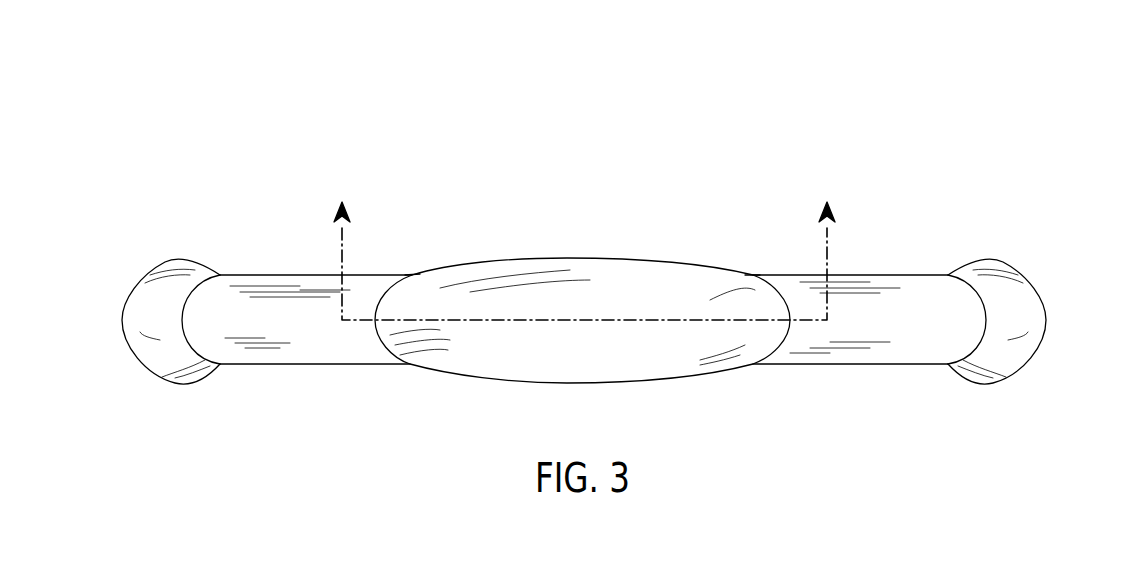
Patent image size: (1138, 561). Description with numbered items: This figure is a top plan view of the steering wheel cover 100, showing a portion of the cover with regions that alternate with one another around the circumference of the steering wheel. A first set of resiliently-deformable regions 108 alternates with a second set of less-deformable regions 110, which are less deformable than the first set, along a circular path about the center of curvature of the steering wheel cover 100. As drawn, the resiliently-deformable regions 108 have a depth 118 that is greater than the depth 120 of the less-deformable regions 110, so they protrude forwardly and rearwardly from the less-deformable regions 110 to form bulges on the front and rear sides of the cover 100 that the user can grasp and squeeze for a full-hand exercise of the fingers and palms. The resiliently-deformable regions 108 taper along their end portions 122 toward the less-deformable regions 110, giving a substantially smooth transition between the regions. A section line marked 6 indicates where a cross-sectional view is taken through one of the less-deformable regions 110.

The steering wheel cover 100 is at (977, 115).
The resiliently-deformable regions 108 is at (127, 300).
The less-deformable regions 110 is at (266, 275).
The depth of resiliently-deformable regions 118 is at (583, 381).
The depth of less-deformable regions 120 is at (887, 275).
The end portions 122 is at (425, 275).
The section line 6- 6 is at (585, 244).